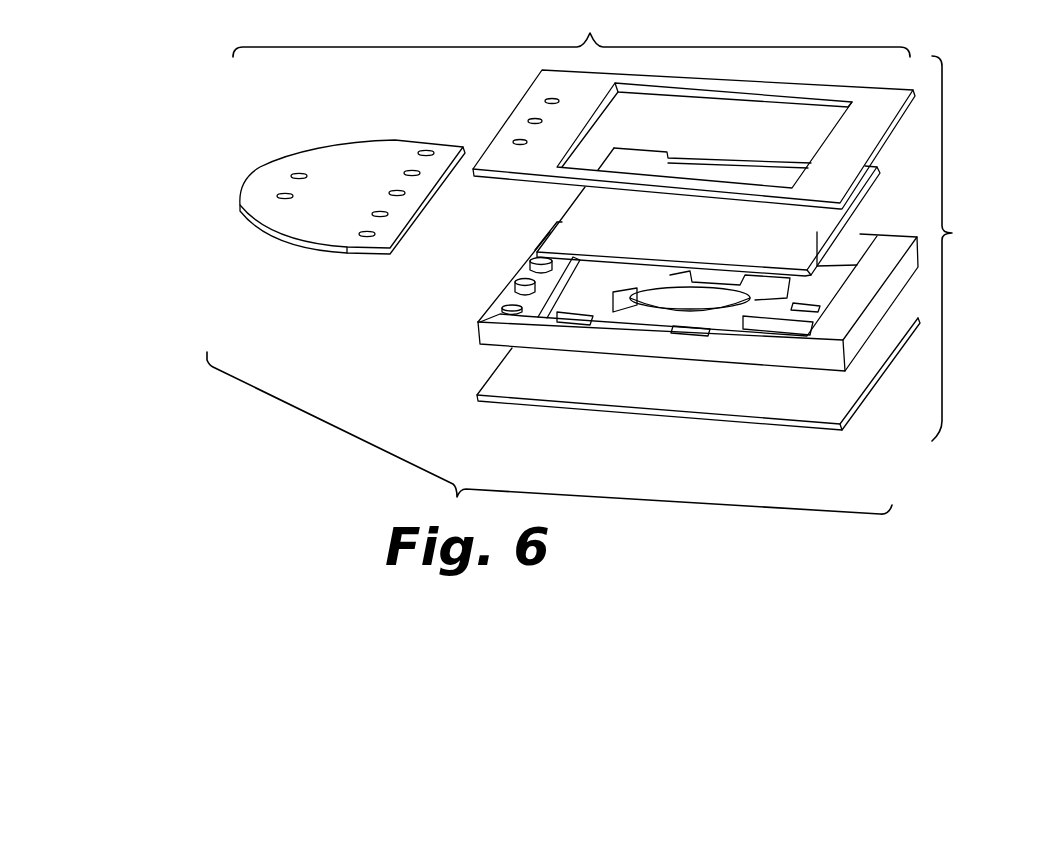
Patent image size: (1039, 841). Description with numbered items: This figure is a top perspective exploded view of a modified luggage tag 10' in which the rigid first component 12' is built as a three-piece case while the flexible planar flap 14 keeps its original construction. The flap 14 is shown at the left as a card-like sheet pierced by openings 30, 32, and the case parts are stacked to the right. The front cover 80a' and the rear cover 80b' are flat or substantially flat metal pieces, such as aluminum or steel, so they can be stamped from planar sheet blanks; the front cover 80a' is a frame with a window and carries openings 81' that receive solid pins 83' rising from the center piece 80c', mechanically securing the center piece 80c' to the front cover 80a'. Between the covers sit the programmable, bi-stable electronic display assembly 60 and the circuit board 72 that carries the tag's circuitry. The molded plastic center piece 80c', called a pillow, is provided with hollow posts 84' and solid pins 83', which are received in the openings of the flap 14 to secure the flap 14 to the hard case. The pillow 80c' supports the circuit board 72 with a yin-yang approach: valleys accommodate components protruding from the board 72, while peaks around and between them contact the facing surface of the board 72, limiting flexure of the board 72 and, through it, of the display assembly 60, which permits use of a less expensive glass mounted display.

The modified luggage tag 10' is at (571, 28).
The first component 12' is at (604, 285).
The flap 14 is at (314, 170).
The apertures 30 is at (297, 173).
The apertures 32 is at (425, 150).
The electronic display assembly 60 is at (577, 220).
The circuit board 72 is at (530, 251).
The front cover 80a' is at (674, 134).
The rear cover 80b' is at (659, 374).
The center piece (pillow) 80c' is at (656, 301).
The openings 81' is at (496, 117).
The solid pins 83' is at (485, 280).
The hollow posts 84' is at (464, 307).